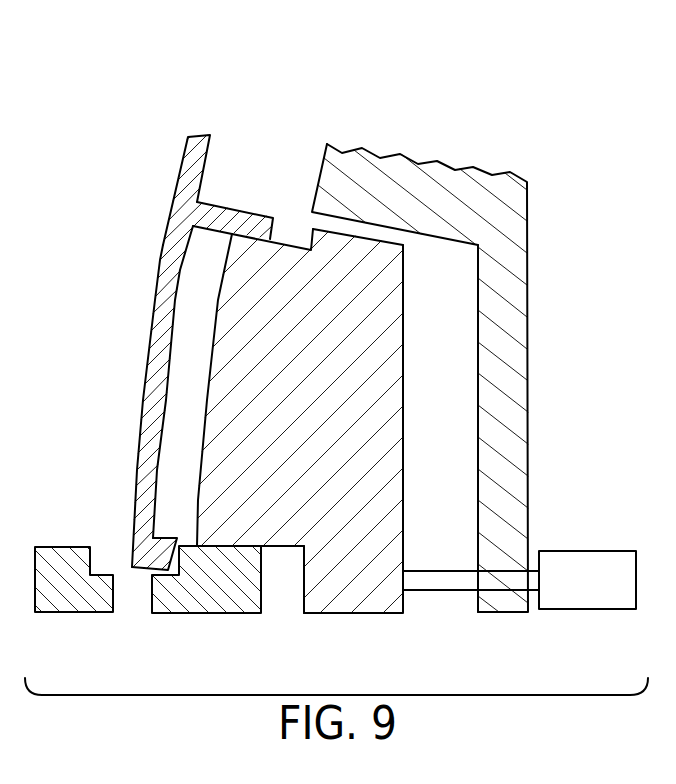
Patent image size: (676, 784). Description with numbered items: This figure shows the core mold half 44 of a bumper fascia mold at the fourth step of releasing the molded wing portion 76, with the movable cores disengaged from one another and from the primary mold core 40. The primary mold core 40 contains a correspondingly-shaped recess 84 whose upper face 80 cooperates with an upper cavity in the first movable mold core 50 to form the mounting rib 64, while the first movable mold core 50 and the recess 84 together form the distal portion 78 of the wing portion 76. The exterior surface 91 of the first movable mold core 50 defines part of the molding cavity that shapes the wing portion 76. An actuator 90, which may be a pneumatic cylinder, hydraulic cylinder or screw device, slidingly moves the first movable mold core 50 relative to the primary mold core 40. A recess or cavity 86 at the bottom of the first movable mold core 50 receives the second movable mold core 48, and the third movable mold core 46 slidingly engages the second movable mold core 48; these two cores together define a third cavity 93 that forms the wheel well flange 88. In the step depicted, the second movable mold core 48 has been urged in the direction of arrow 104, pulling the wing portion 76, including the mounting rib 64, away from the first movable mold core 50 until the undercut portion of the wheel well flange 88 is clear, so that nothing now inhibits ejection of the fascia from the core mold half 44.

The core mold half 44 is at (432, 115).
The primary mold core 40 is at (528, 228).
The recess 84 is at (445, 390).
The first movable mold core 50 is at (353, 613).
The upper face 80 is at (407, 233).
The exterior surface 91 is at (217, 322).
The recess or cavity 86 is at (277, 568).
The wing portion 76 is at (182, 163).
The mounting rib 64 is at (213, 204).
The distal portion 78 is at (143, 387).
The wheel well flange 88 is at (163, 555).
The third movable mold core 46 is at (82, 612).
The second movable mold core 48 is at (215, 612).
The third cavity 93 is at (108, 555).
The arrow 104 is at (163, 625).
The actuator 90 is at (592, 560).